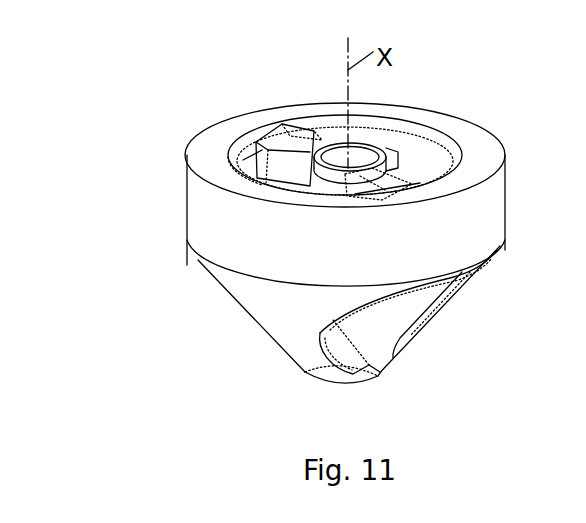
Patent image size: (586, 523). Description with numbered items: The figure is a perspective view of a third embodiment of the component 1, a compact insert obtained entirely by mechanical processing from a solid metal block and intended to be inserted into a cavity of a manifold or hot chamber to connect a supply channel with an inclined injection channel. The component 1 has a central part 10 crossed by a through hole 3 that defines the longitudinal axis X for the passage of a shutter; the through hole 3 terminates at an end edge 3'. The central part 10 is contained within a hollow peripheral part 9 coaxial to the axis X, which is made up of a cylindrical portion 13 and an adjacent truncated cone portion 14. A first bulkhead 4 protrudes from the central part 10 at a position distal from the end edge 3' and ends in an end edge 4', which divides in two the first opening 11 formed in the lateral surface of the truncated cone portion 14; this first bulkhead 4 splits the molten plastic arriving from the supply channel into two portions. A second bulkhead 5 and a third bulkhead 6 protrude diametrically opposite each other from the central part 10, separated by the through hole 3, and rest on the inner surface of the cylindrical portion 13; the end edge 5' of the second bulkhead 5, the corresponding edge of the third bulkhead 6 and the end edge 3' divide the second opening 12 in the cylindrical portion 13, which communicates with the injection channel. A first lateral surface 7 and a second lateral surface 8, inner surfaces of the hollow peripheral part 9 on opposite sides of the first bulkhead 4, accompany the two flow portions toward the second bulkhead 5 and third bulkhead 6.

The component 1 is at (178, 112).
The through hole 3 is at (372, 109).
The end edge of the through hole 3' is at (403, 117).
The first bulkhead 4 is at (418, 354).
The end edge of the first bulkhead 4' is at (420, 317).
The second bulkhead 5 is at (276, 120).
The end edge of the second bulkhead 5' is at (299, 89).
The third bulkhead 6 is at (367, 185).
The first lateral surface 7 is at (243, 162).
The second lateral surface 8 is at (420, 167).
The hollow peripheral part 9 is at (487, 124).
The central part 10 is at (393, 157).
The first opening 11 is at (408, 344).
The second opening 12 is at (245, 142).
The cylindrical portion 13 is at (200, 220).
The truncated cone portion 14 is at (282, 310).